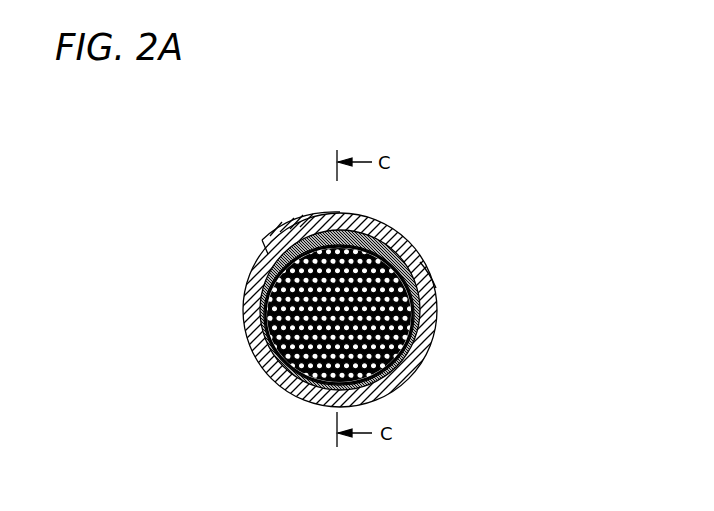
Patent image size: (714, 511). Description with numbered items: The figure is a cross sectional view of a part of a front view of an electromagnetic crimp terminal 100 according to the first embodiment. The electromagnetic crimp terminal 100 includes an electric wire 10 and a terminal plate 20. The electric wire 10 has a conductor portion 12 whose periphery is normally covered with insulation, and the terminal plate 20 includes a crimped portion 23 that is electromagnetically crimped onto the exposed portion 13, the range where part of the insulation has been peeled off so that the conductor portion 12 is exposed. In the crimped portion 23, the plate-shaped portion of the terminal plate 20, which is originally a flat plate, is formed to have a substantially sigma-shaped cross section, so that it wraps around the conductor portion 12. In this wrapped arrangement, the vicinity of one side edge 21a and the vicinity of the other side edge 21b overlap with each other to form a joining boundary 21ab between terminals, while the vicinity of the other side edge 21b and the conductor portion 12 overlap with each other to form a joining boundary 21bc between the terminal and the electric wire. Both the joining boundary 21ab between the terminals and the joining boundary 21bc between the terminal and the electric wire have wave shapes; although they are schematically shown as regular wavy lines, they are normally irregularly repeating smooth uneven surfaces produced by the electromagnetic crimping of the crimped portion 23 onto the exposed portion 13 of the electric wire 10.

The electromagnetic crimp terminal 100 is at (280, 138).
The terminal plate 20 is at (554, 83).
The one side edge 21a is at (262, 250).
The joining boundary between terminals 21ab is at (345, 211).
The joining boundary between the terminal and the electric wire 21bc is at (355, 230).
The other side edge 21b is at (395, 250).
The crimped portion 23 is at (435, 276).
The electric wire 10 is at (572, 312).
The exposed portion 13 is at (415, 312).
The conductor portion 12 is at (400, 372).